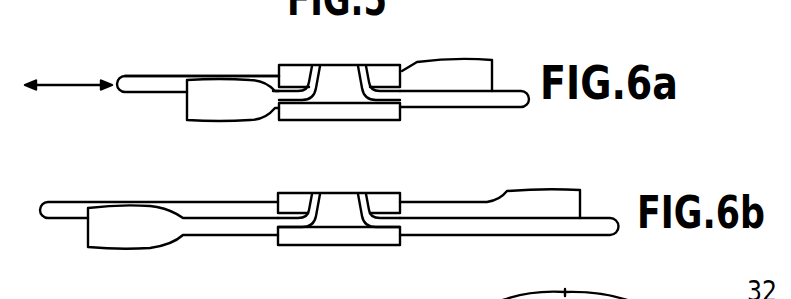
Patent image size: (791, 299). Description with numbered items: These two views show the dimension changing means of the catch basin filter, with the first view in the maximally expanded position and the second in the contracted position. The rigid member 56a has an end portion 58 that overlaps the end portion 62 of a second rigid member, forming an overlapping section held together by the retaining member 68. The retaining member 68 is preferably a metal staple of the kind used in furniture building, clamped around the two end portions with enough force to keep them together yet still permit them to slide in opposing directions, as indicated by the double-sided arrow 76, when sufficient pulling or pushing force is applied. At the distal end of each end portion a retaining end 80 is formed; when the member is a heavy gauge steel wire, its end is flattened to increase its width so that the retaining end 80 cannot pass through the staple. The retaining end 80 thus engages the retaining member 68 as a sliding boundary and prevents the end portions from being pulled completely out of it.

In FIG. 6a, the rigid member 56a is at (143, 70).
In FIG. 6a, the end portion 58 is at (175, 75).
In FIG. 6b, the end portion 58 is at (77, 202).
In FIG. 6a, the end portion 62 is at (458, 109).
In FIG. 6b, the end portion 62 is at (460, 237).
In FIG. 6a, the retaining member 68 is at (340, 121).
In FIG. 6b, the retaining member 68 is at (337, 246).
In FIG. 6a, the double-sided arrow 76 is at (70, 83).
In FIG. 6a, the retaining end 80 is at (230, 121).
In FIG. 6b, the retaining end 80 is at (125, 249).